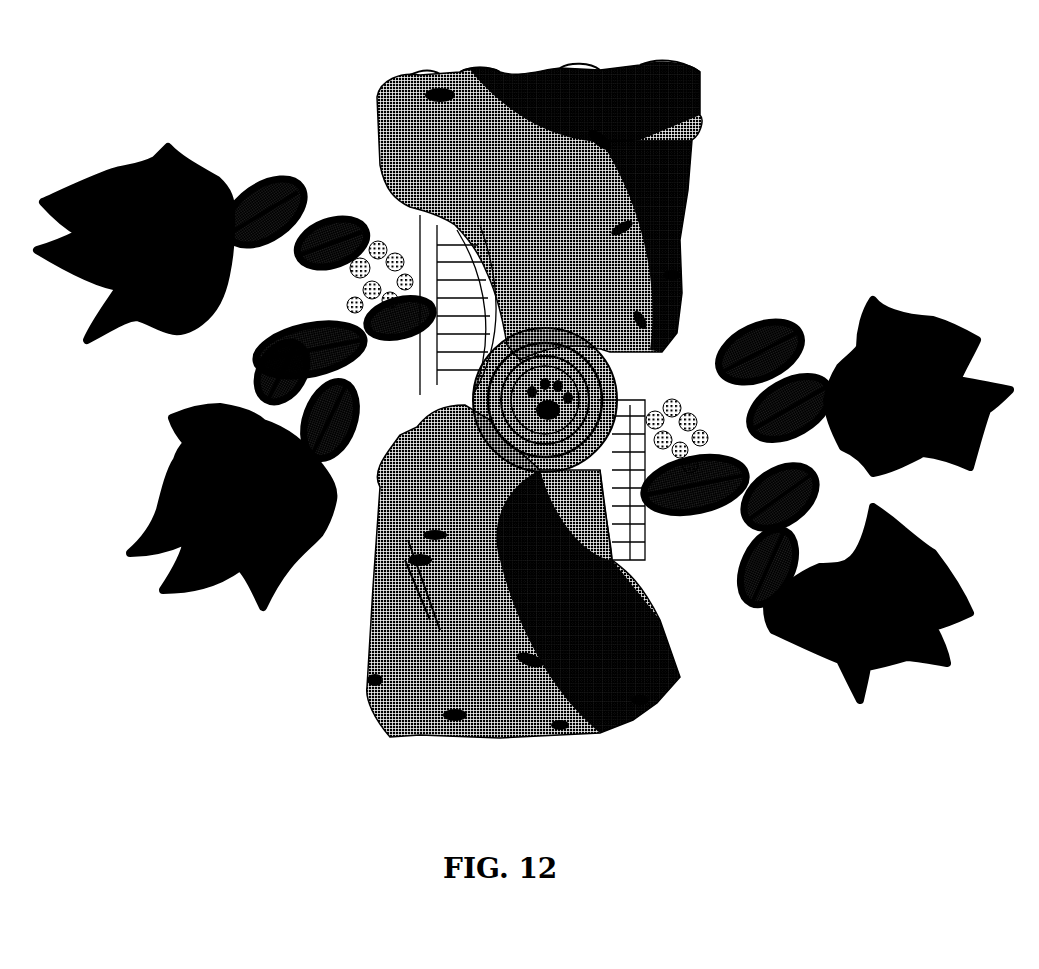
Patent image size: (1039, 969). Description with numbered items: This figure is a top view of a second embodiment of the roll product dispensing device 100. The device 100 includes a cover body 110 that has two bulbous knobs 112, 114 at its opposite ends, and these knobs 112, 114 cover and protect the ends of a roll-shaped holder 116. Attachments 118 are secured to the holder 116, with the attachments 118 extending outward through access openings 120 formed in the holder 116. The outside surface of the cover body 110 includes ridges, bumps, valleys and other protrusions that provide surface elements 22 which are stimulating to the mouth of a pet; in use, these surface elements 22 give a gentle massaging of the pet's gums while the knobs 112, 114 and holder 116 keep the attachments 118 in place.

The roll product dispensing device 100 is at (786, 62).
The cover body 110 is at (725, 193).
The bulbous knob 112 is at (650, 67).
The bulbous knob 114 is at (657, 700).
The roll-shaped holder 116 is at (463, 410).
The attachments 118 is at (393, 247).
The access openings 120 is at (620, 397).
The surface elements 22 is at (622, 228).